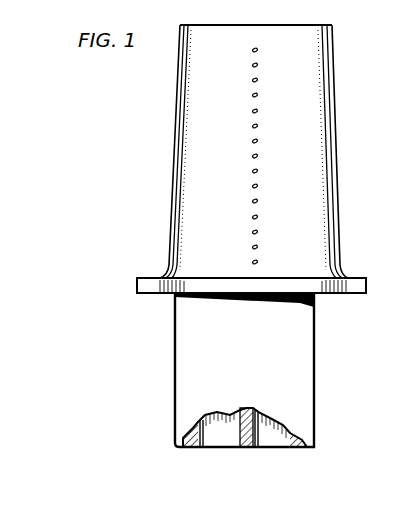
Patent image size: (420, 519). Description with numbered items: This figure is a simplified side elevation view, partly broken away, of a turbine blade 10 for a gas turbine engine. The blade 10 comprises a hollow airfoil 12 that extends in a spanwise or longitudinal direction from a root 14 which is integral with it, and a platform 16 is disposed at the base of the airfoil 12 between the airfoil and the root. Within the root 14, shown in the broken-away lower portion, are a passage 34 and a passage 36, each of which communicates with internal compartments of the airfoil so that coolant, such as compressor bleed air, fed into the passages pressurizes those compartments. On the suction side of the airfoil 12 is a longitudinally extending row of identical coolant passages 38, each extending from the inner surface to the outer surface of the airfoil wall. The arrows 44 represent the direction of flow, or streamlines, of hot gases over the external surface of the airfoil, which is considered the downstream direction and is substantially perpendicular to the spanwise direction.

The turbine blade 10 is at (355, 27).
The hollow airfoil 12 is at (323, 121).
The root 14 is at (258, 353).
The platform 16 is at (158, 288).
The passage 34 is at (207, 440).
The passage 36 is at (264, 440).
The coolant passages 38 is at (258, 80).
The arrows 44 is at (240, 102).